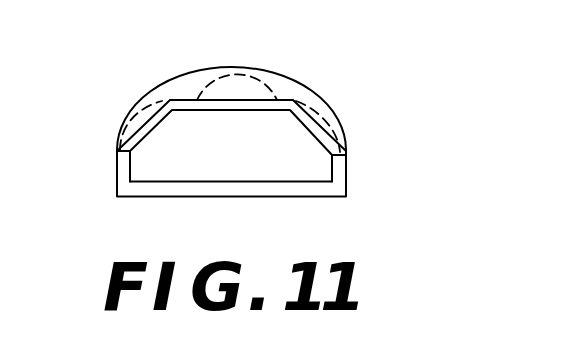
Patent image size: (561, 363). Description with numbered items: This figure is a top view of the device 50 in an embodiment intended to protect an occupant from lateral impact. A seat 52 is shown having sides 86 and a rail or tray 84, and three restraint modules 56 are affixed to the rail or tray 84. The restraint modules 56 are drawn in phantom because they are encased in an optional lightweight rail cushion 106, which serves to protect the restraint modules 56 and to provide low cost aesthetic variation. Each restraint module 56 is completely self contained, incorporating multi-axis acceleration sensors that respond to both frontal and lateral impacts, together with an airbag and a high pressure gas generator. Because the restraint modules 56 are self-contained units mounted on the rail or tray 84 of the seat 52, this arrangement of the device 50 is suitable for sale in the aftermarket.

The cap assembly 50 is at (260, 137).
The seat 52 is at (200, 188).
The restraint module 56 is at (118, 121).
The rail or tray 84 is at (314, 135).
The sides 86 is at (117, 168).
The rail cushion 106 is at (153, 88).